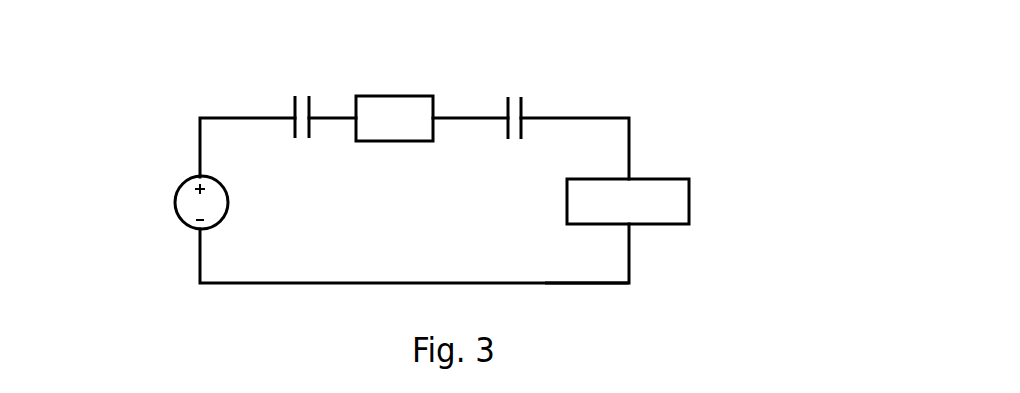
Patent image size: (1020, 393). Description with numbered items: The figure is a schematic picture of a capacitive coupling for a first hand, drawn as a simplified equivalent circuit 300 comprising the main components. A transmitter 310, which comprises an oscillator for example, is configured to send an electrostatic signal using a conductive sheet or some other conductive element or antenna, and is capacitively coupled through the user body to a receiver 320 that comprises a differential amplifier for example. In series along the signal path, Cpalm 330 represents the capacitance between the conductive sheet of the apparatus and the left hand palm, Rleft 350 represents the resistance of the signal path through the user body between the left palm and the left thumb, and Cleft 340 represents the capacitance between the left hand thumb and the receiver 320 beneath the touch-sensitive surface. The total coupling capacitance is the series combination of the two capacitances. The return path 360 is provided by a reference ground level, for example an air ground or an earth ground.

The simplified equivalent circuit 300 is at (712, 51).
The transmitter 310 is at (175, 200).
The receiver 320 is at (689, 198).
The Cpalm 330 is at (295, 96).
The Cleft 340 is at (508, 97).
The Rleft 350 is at (398, 96).
The return path 360 is at (630, 285).